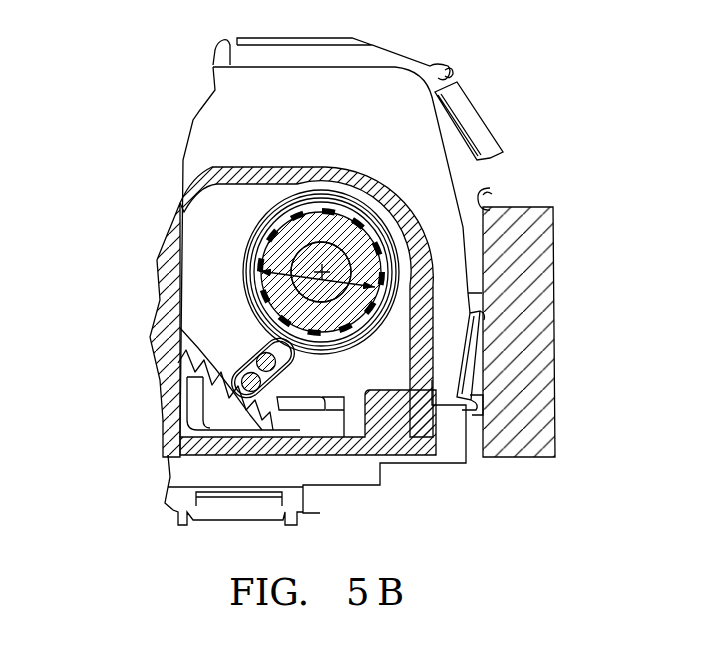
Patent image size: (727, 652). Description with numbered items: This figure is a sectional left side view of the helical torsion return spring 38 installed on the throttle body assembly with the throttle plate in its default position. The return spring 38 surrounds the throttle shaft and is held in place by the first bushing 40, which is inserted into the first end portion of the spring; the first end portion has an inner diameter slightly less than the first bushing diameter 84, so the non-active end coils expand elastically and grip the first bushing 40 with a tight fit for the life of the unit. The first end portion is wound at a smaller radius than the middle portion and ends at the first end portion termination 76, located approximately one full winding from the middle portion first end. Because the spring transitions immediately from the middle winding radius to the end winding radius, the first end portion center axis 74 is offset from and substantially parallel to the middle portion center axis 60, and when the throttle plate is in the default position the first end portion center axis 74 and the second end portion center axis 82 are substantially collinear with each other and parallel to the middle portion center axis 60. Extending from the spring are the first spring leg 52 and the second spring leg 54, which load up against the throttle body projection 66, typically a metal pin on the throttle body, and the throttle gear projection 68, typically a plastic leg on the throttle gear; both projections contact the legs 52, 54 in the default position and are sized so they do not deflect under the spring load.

The helical torsion return spring 38 is at (350, 184).
The first bushing 40 is at (324, 216).
The first spring leg 52 is at (302, 332).
The second spring leg 54 is at (358, 440).
The middle portion center axis 60 is at (316, 262).
The throttle body projection 66 is at (262, 362).
The throttle gear projection 68 is at (280, 338).
The first end portion center axis 74 is at (218, 242).
The first end portion termination 76 is at (452, 463).
The second end portion center axis 82 is at (318, 272).
The first bushing diameter 84 is at (340, 228).